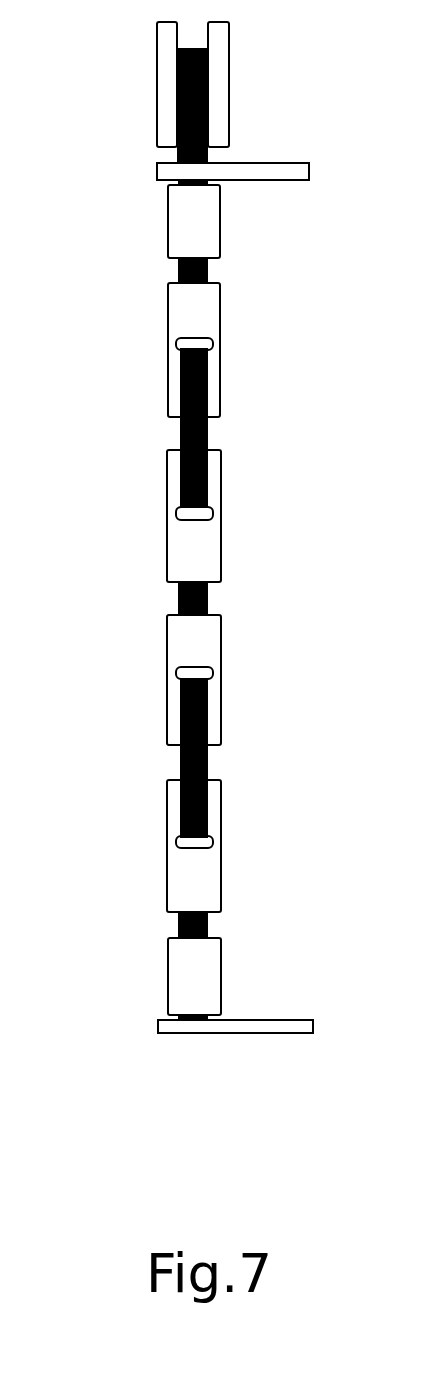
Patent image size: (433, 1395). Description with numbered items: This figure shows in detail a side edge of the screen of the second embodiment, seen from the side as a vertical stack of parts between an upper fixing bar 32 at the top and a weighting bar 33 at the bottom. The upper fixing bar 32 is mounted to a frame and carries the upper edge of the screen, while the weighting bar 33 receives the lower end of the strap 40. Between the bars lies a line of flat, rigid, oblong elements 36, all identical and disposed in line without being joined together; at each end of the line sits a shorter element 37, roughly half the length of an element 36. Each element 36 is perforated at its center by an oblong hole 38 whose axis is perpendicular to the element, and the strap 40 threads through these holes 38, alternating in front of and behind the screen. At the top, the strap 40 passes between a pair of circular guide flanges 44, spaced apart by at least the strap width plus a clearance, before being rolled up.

The circular guide flange 44 is at (170, 73).
The upper fixing bar 32 is at (285, 170).
The end element 37 is at (178, 233).
The element 36 is at (180, 318).
The strap 40 is at (208, 430).
The oblong hole 38 is at (200, 668).
The weighting bar 33 is at (280, 1028).